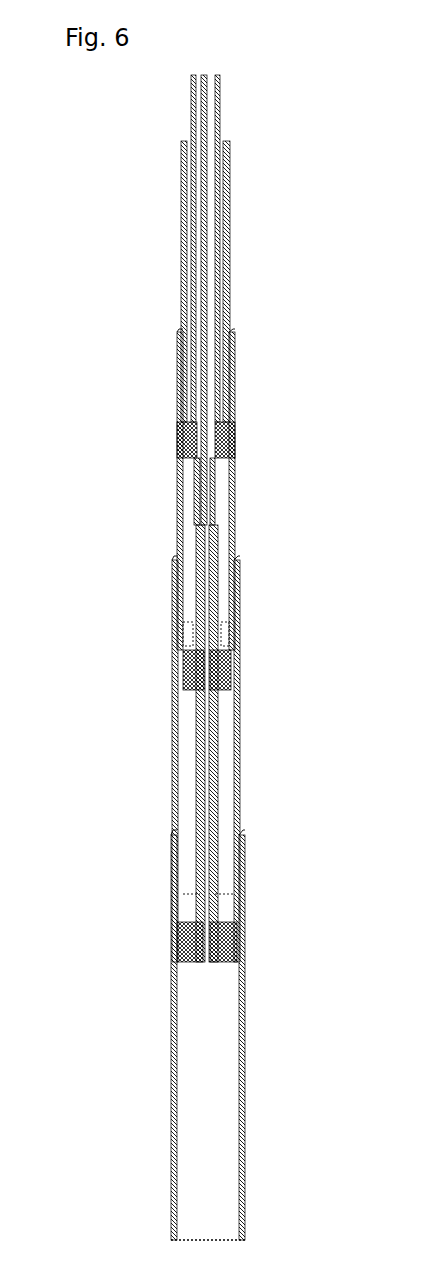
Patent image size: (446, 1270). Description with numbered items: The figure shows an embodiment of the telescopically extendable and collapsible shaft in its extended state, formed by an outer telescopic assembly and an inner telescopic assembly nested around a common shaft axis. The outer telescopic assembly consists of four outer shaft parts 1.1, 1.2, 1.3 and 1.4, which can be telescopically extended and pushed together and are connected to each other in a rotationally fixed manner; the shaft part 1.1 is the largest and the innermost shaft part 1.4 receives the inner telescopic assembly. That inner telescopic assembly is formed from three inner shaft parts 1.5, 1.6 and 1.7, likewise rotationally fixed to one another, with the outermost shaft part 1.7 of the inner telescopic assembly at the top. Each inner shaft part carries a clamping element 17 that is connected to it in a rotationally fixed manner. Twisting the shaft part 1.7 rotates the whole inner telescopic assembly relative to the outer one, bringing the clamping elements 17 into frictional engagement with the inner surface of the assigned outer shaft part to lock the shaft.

The shaft part 1.1 is at (245, 1032).
The shaft part 1.2 is at (241, 741).
The shaft part 1.3 is at (236, 521).
The innermost shaft part 1.4 is at (229, 232).
The inner shaft part 1.5 is at (214, 826).
The inner shaft part 1.6 is at (215, 492).
The outermost shaft part of the inner telescopic assembly 1.7 is at (220, 110).
The clamping element 17 is at (235, 443).